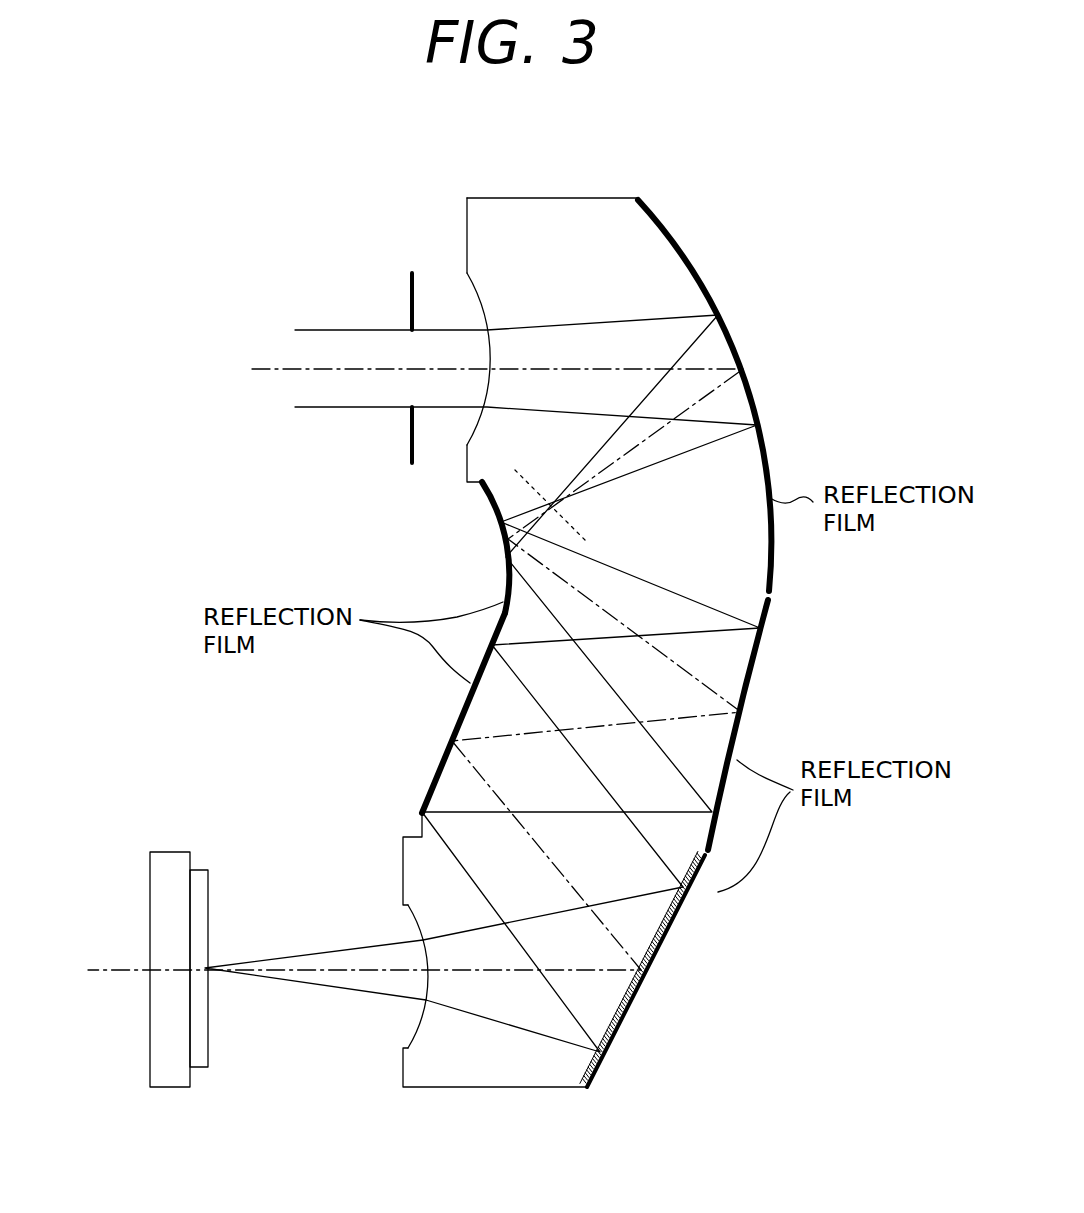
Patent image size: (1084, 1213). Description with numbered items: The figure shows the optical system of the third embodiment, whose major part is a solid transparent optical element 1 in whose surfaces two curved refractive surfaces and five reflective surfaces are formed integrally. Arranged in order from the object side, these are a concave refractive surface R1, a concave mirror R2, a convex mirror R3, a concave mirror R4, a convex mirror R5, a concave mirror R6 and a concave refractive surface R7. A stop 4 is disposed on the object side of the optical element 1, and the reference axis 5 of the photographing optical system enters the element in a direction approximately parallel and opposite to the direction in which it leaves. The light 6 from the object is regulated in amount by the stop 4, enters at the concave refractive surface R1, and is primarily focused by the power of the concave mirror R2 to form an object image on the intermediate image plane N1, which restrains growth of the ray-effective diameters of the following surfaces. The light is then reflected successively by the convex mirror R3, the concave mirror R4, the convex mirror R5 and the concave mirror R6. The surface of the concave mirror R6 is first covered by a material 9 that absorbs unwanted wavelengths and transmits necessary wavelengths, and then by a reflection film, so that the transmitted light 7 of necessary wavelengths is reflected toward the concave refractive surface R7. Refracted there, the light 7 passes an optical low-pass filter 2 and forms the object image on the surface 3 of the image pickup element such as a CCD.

The optical element 1 is at (625, 262).
The optical low-pass filter 2 is at (208, 1053).
The surface of the image pickup element 3 is at (148, 1060).
The stop 4 is at (410, 273).
The reference axis 5 is at (270, 366).
The light from the object 6 is at (363, 330).
The light of necessary wavelengths 7 is at (315, 988).
The material that absorbs light of unwanted wavelengths 9 is at (597, 1060).
The concave refractive surface R1 is at (480, 297).
The concave mirror R2 is at (706, 277).
The convex mirror R3 is at (503, 562).
The concave mirror R4 is at (764, 632).
The convex mirror R5 is at (460, 713).
The concave mirror R6 is at (653, 973).
The concave refractive surface R7 is at (413, 920).
The intermediate image plane N1 is at (540, 490).